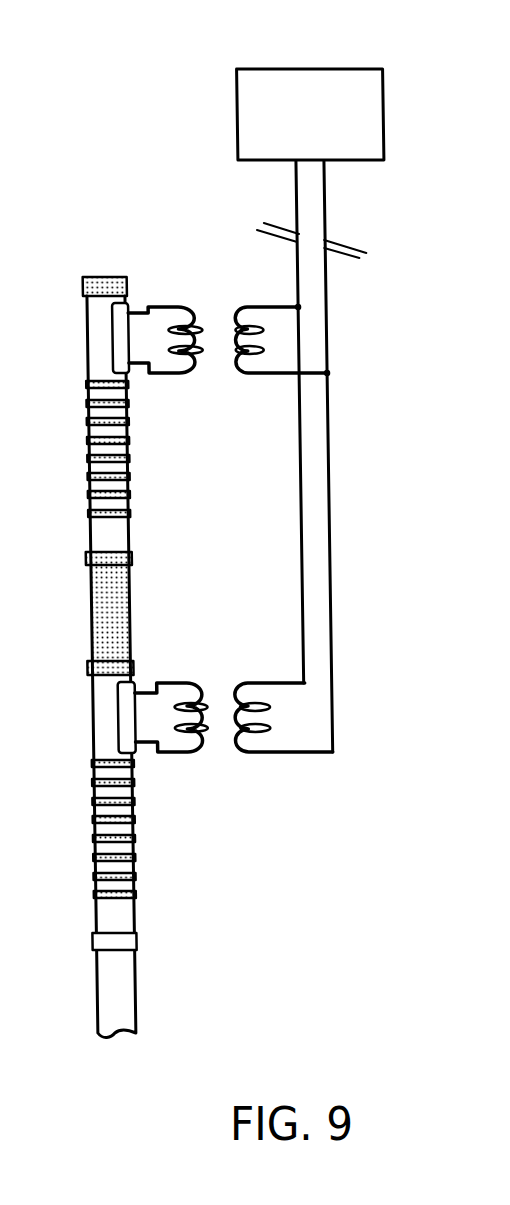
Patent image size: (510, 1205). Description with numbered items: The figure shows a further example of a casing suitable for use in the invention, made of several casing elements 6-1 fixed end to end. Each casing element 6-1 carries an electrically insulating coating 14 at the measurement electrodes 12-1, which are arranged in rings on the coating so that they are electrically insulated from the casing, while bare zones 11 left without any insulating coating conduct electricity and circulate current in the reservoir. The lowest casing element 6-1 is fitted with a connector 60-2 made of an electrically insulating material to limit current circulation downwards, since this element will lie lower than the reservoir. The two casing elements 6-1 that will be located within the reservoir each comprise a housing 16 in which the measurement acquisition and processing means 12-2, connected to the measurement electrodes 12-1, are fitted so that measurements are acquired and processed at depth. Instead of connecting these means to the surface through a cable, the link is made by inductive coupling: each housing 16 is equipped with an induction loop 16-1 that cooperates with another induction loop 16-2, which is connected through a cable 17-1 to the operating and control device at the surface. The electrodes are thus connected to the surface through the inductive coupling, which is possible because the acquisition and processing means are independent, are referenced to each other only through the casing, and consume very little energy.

The casing element 6-1 is at (87, 352).
The bare zone 11 is at (91, 278).
The measurement electrode 12-1 is at (124, 876).
The measurement acquisition and processing means 12-2 is at (240, 113).
The electrically insulating coating 14 is at (125, 838).
The housing 16 is at (122, 742).
The induction loop 16-1 is at (183, 307).
The induction loop 16-2 is at (246, 376).
The cable 17-1 is at (326, 683).
The connector 60-2 is at (127, 942).